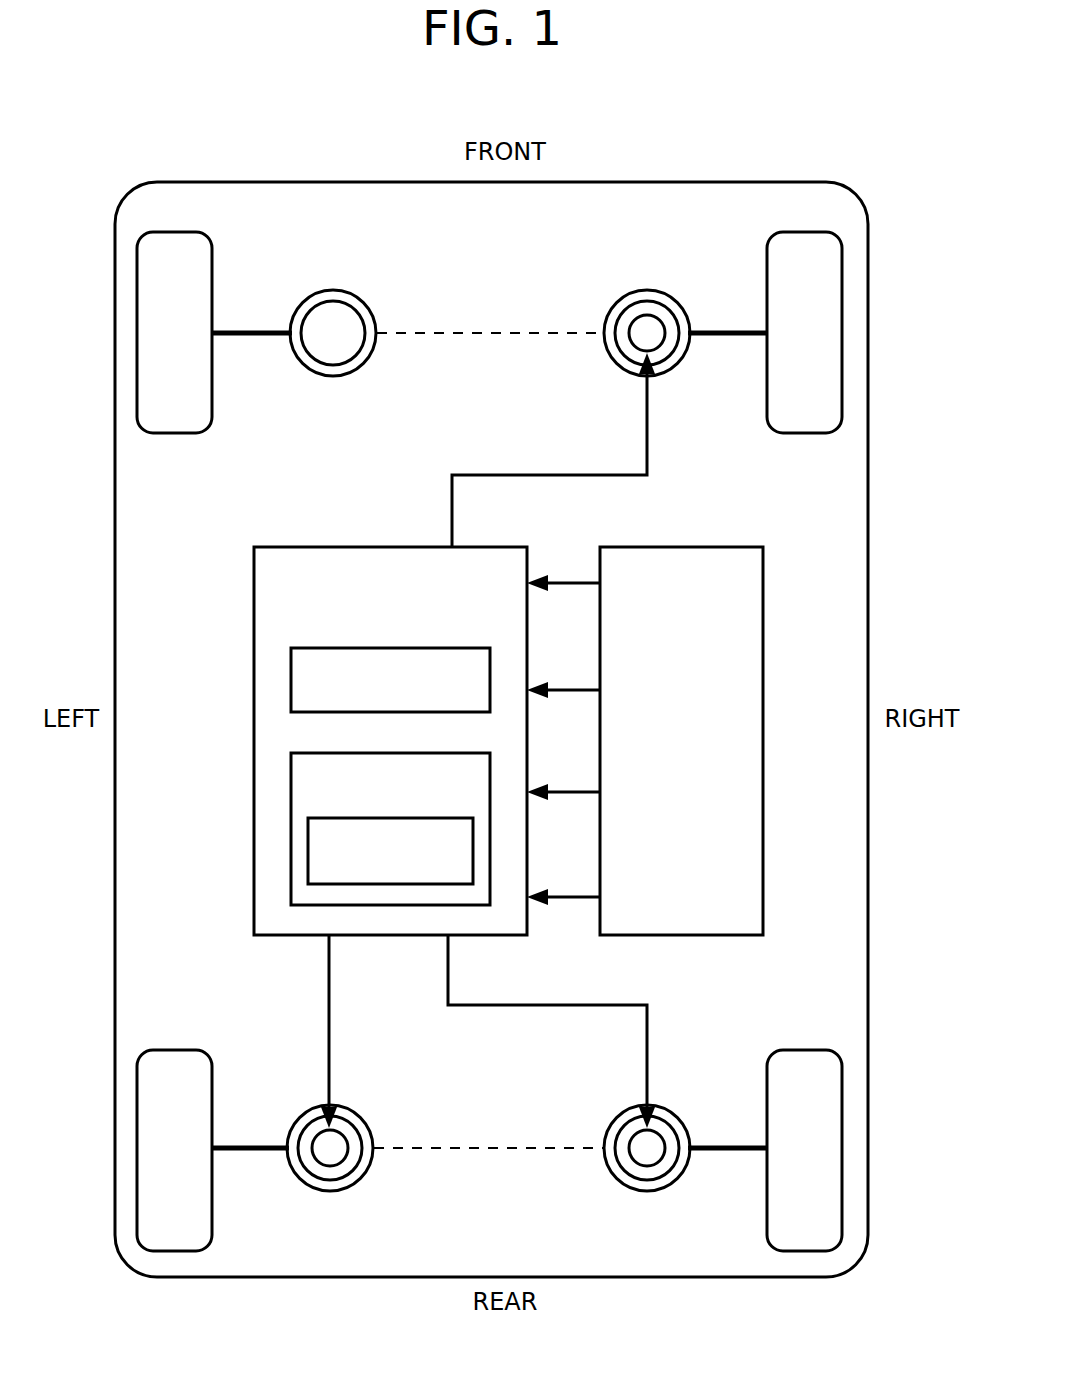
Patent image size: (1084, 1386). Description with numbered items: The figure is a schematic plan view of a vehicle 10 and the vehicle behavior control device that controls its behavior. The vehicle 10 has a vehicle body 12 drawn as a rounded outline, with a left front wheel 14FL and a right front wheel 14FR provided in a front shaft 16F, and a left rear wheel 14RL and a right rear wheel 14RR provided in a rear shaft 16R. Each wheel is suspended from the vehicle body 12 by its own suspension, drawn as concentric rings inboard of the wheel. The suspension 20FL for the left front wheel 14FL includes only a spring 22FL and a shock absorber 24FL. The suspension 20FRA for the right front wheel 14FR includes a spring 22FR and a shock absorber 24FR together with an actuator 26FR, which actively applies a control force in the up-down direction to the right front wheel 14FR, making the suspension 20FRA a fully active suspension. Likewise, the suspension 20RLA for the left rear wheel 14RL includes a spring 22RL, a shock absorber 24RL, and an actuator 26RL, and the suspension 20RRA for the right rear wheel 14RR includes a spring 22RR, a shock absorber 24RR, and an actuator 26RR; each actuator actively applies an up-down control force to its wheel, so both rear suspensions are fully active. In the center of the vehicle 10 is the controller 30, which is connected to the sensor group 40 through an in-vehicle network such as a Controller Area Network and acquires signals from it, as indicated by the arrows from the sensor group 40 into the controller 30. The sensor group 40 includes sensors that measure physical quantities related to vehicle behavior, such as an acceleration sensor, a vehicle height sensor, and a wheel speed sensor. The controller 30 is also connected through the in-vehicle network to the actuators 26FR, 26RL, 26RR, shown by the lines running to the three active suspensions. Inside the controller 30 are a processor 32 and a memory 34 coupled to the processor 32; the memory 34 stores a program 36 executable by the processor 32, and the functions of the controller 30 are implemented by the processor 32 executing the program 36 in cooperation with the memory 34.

The vehicle 10 is at (752, 165).
The vehicle body 12 is at (273, 181).
The left front wheel 14FL is at (170, 434).
The right front wheel 14FR is at (808, 433).
The left rear wheel 14RL is at (172, 1050).
The right rear wheel 14RR is at (797, 1048).
The front shaft 16F is at (467, 343).
The rear shaft 16R is at (486, 1146).
The suspension 20FL is at (361, 287).
The suspension 20FRA is at (606, 285).
The suspension 20RLA is at (369, 1101).
The suspension 20RRA is at (605, 1101).
The spring 22FL is at (327, 290).
The spring 22FR is at (673, 293).
The spring 22RL is at (302, 1113).
The spring 22RR is at (675, 1112).
The shock absorber 24FL is at (367, 320).
The shock absorber 24FR is at (617, 323).
The shock absorber 24RL is at (323, 1183).
The shock absorber 24RR is at (647, 1180).
The actuator 26FR is at (627, 352).
The actuator 26RL is at (355, 1172).
The actuator 26RR is at (628, 1170).
The controller 30 is at (332, 547).
The processor 32 is at (290, 678).
The memory 34 is at (290, 790).
The program 36 is at (308, 862).
The sensor group 40 is at (763, 701).